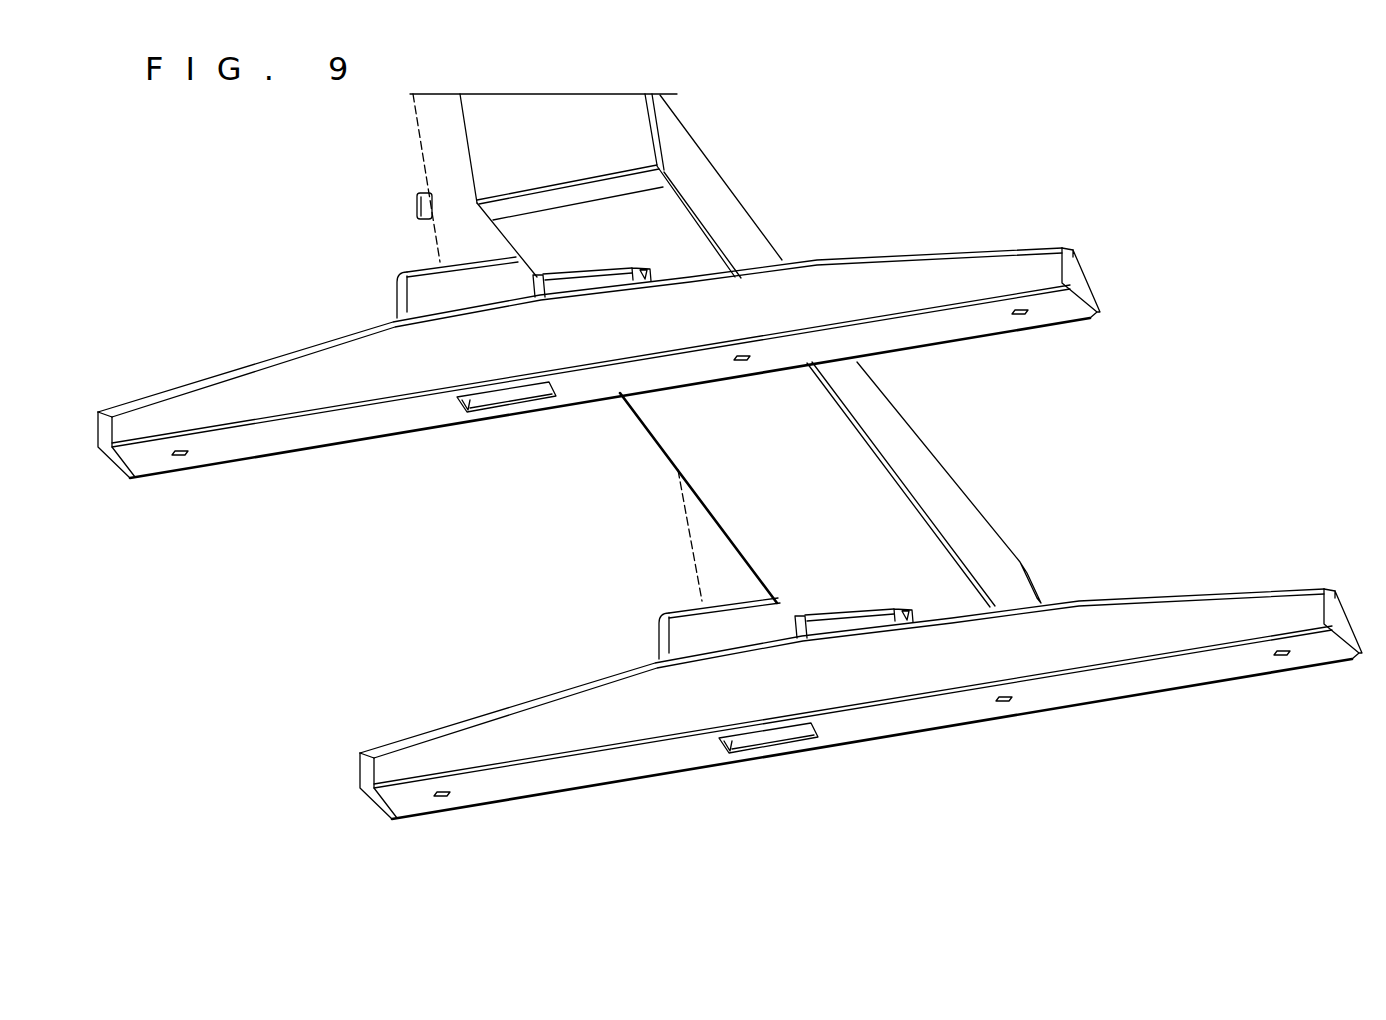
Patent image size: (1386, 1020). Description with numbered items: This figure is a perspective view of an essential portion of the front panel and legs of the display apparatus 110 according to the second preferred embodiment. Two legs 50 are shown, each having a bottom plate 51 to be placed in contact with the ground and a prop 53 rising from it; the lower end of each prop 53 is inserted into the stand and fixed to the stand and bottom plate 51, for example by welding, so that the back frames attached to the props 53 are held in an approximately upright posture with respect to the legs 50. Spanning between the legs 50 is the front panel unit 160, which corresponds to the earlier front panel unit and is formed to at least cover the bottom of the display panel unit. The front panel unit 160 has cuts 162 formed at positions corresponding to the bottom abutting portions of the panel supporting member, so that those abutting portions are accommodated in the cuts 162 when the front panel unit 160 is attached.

The display apparatus 110 is at (1000, 157).
The front panel unit 160 is at (733, 206).
The prop 53 is at (443, 167).
The leg 50 is at (395, 378).
The bottom plate 51 is at (407, 422).
The cut 162 is at (590, 275).